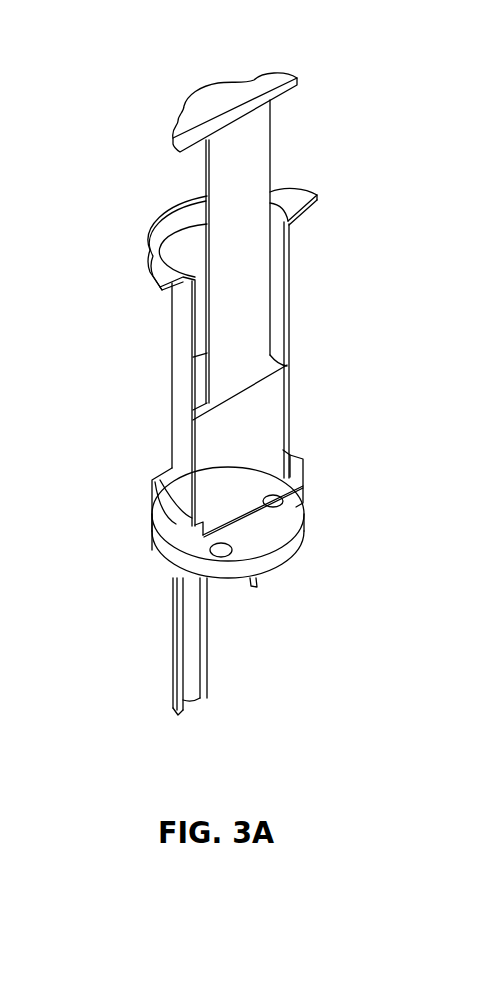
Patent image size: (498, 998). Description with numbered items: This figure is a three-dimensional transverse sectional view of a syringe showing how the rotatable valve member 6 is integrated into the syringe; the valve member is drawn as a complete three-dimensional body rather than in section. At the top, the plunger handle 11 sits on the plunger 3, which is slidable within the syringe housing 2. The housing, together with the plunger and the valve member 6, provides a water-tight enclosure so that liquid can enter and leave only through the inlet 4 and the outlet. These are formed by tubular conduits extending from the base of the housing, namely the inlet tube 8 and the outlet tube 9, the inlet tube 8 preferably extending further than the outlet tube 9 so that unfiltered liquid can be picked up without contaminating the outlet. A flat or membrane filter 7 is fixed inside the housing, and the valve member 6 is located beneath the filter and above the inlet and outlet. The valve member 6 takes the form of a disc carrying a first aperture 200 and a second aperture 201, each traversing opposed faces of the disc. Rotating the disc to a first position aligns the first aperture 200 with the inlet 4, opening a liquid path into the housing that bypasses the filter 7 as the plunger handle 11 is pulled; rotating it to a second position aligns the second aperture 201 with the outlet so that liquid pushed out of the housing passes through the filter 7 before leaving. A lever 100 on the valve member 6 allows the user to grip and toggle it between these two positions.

The plunger handle 11 is at (227, 87).
The plunger 3 is at (270, 117).
The syringe housing 2 is at (172, 398).
The lever 100 is at (152, 480).
The rotatable valve member 6 is at (287, 552).
The filter 7 is at (268, 497).
The first aperture 200 is at (250, 547).
The second aperture 201 is at (292, 513).
The outlet conduit or tube 9 is at (250, 586).
The inlet 4 is at (190, 580).
The inlet conduit or tube 8 is at (172, 657).